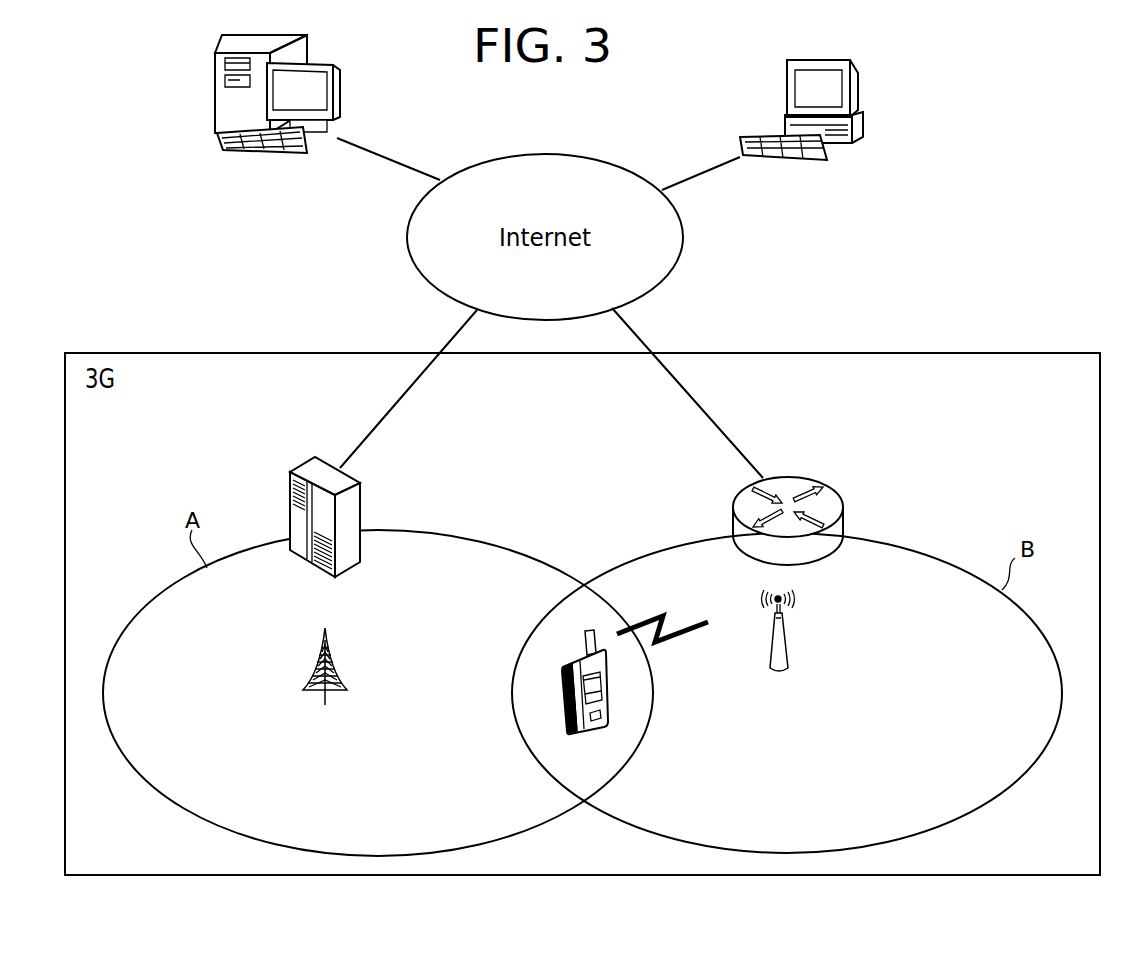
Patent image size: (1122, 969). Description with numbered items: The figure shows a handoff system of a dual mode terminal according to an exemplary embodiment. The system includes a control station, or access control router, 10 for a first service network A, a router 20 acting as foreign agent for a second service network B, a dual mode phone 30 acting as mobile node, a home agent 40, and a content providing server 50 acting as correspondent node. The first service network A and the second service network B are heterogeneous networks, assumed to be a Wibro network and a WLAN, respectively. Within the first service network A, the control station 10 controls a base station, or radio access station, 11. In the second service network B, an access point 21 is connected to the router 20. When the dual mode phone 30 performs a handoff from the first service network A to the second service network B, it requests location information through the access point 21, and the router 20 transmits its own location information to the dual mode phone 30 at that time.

The control station (access control router, ACR) 10 is at (353, 497).
The base station (radio access station, RAS) 11 is at (317, 658).
The router (FA) 20 is at (833, 500).
The access point (AP) 21 is at (785, 640).
The dual mode phone (MN) 30 is at (582, 653).
The home agent (HA) 40 is at (215, 97).
The content providing server (CN) 50 is at (860, 87).